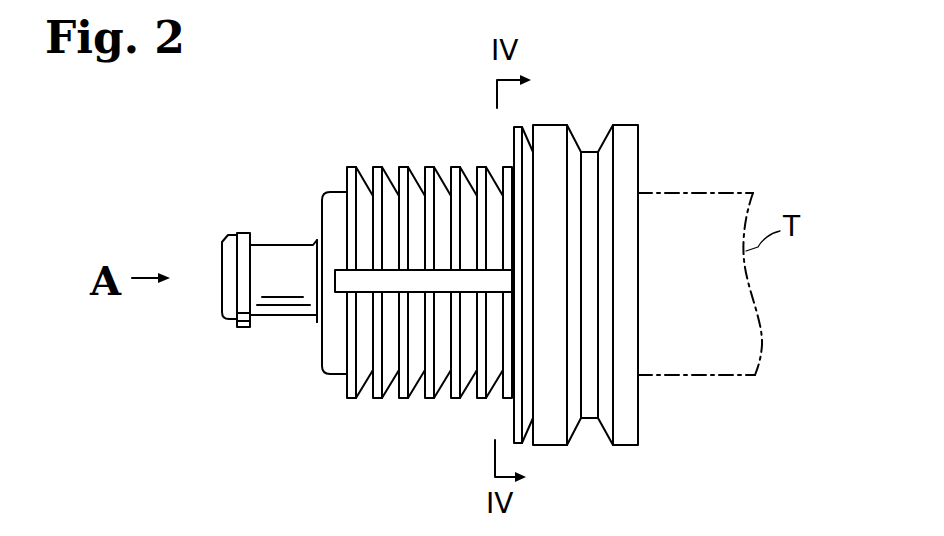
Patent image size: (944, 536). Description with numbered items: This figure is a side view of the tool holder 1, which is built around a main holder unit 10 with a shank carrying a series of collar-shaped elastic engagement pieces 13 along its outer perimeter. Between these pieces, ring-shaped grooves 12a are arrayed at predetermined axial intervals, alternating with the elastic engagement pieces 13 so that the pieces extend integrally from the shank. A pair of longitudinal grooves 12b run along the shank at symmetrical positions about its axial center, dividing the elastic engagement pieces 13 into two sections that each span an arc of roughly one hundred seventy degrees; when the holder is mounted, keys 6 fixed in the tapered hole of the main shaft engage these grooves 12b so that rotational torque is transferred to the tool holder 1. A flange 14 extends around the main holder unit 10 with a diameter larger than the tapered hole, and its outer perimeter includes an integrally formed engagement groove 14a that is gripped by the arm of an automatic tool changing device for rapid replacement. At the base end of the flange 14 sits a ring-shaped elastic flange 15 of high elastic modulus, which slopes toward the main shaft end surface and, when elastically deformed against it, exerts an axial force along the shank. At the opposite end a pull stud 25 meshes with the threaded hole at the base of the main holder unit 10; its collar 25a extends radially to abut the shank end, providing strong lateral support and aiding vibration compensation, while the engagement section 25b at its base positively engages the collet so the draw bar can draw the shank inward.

The tool holder 1 is at (415, 102).
The key 6 is at (326, 284).
The main holder unit 10 is at (652, 136).
The ring-shaped grooves 12a is at (393, 398).
The grooves 12b is at (373, 281).
The elastic engagement pieces 13 is at (385, 166).
The flange 14 is at (642, 293).
The engagement groove 14a is at (587, 420).
The elastic flange 15 is at (518, 127).
The pull stud 25 is at (278, 332).
The collar 25a is at (323, 367).
The engagement section 25b is at (227, 321).